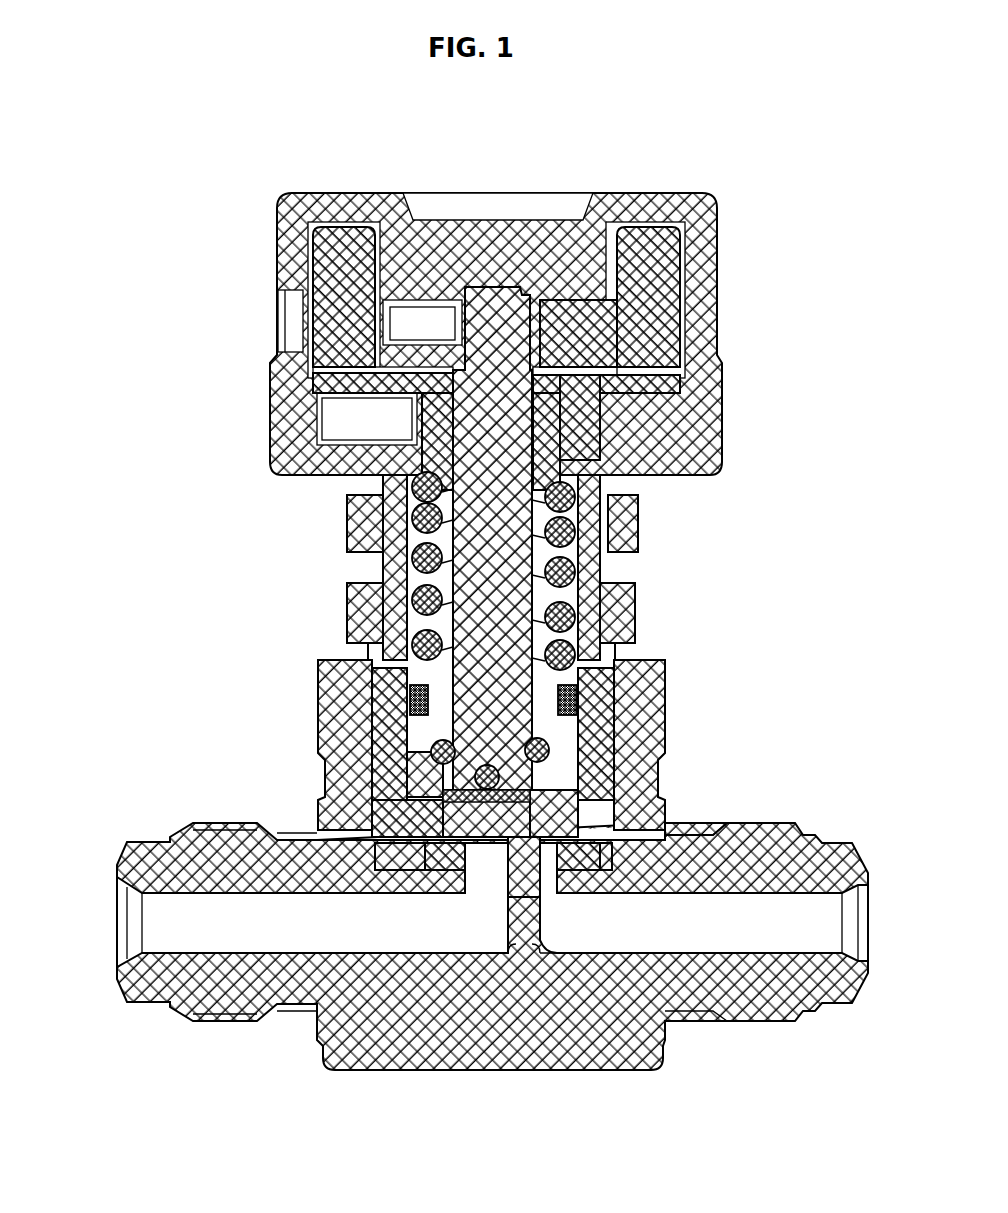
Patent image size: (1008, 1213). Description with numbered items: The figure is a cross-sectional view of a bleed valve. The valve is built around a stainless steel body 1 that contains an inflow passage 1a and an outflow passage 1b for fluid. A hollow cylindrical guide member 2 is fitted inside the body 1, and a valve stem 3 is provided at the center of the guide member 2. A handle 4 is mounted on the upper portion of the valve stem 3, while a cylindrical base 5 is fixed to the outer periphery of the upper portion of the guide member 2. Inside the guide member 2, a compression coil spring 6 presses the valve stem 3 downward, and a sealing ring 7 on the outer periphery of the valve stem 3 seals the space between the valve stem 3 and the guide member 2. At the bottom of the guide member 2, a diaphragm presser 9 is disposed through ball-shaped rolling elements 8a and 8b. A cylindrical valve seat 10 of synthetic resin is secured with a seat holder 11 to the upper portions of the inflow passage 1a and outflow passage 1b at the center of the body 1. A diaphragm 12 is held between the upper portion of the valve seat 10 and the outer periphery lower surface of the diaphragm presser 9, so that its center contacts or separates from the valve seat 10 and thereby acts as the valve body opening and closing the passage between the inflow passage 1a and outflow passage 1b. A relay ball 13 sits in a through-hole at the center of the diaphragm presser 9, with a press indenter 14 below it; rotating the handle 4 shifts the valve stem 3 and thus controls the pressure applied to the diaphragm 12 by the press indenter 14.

The body 1 is at (481, 969).
The inflow passage 1a is at (150, 933).
The outflow passage 1b is at (830, 925).
The guide member 2 is at (583, 527).
The valve stem 3 is at (505, 555).
The handle 4 is at (690, 325).
The cylindrical base 5 is at (643, 272).
The compression coil spring 6 is at (583, 595).
The sealing ring 7 is at (660, 668).
The ball-shaped rolling element 8a is at (430, 743).
The ball-shaped rolling element 8b is at (570, 705).
The diaphragm presser 9 is at (403, 793).
The valve seat 10 is at (437, 860).
The seat holder 11 is at (410, 835).
The diaphragm 12 is at (548, 862).
The relay ball 13 is at (548, 752).
The press indenter 14 is at (563, 780).